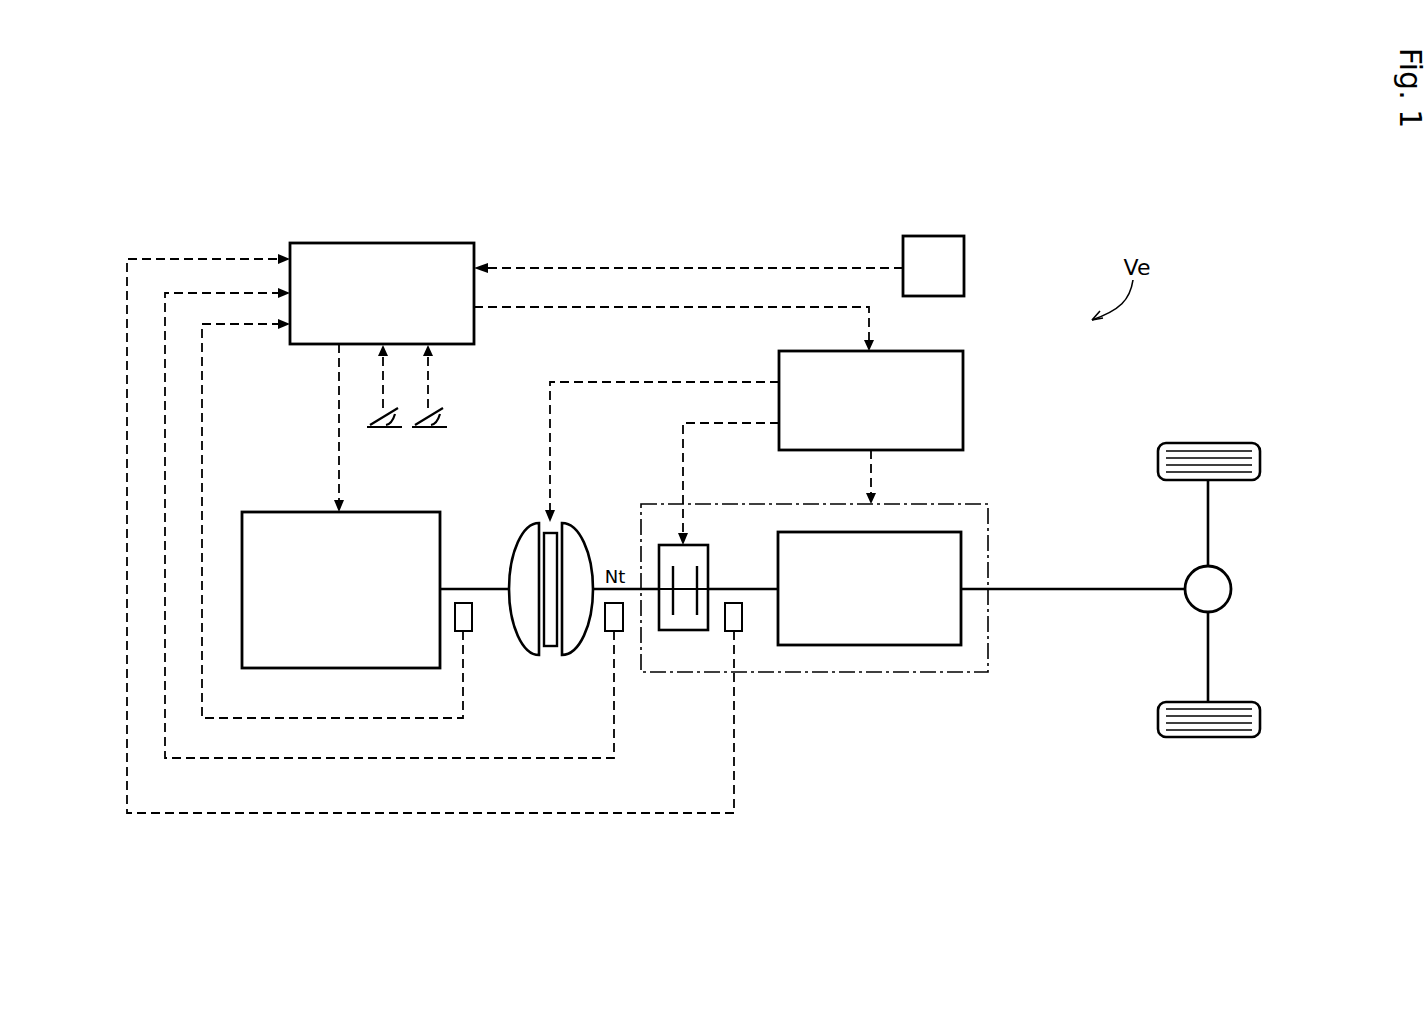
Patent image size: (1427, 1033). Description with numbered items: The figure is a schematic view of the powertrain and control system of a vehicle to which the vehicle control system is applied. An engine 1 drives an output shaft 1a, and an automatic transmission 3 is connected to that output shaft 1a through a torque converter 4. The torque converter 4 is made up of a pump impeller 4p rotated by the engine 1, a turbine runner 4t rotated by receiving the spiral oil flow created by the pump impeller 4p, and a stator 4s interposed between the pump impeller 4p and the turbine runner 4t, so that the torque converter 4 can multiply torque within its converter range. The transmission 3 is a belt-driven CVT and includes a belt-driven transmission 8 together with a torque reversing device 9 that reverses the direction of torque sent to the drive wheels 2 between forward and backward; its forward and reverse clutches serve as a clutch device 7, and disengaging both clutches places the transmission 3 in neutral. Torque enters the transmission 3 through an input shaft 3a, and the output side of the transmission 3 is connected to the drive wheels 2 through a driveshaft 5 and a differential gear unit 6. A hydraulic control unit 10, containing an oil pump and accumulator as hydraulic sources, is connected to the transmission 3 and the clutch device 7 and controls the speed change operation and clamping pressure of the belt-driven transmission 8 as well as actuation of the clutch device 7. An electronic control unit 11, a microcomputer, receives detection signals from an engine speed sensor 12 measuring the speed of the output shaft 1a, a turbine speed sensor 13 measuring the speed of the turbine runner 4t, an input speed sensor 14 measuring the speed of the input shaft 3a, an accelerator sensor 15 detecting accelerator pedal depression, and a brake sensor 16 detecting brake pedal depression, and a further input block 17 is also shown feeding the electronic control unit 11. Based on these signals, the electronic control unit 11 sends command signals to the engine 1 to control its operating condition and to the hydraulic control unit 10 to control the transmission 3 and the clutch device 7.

The engine 1 is at (292, 512).
The output shaft 1a is at (493, 584).
The drive wheels 2 is at (1208, 737).
The automatic transmission 3 is at (988, 530).
The input shaft 3a is at (766, 585).
The torque converter 4 is at (541, 575).
The pump impeller 4p is at (524, 560).
The turbine runner 4t is at (573, 552).
The stator 4s is at (550, 648).
The driveshaft 5 is at (1082, 592).
The differential gear unit 6 is at (1231, 589).
The clutch device 7 is at (693, 618).
The belt-driven transmission 8 is at (878, 645).
The torque reversing device 9 is at (679, 565).
The hydraulic control unit 10 is at (963, 402).
The electronic control unit 11 is at (388, 243).
The engine speed sensor 12 is at (472, 616).
The turbine speed sensor 13 is at (618, 617).
The input speed sensor 14 is at (742, 617).
The accelerator sensor 15 is at (385, 428).
The brake sensor 16 is at (430, 428).
The shift lever position sensor 17 is at (964, 268).